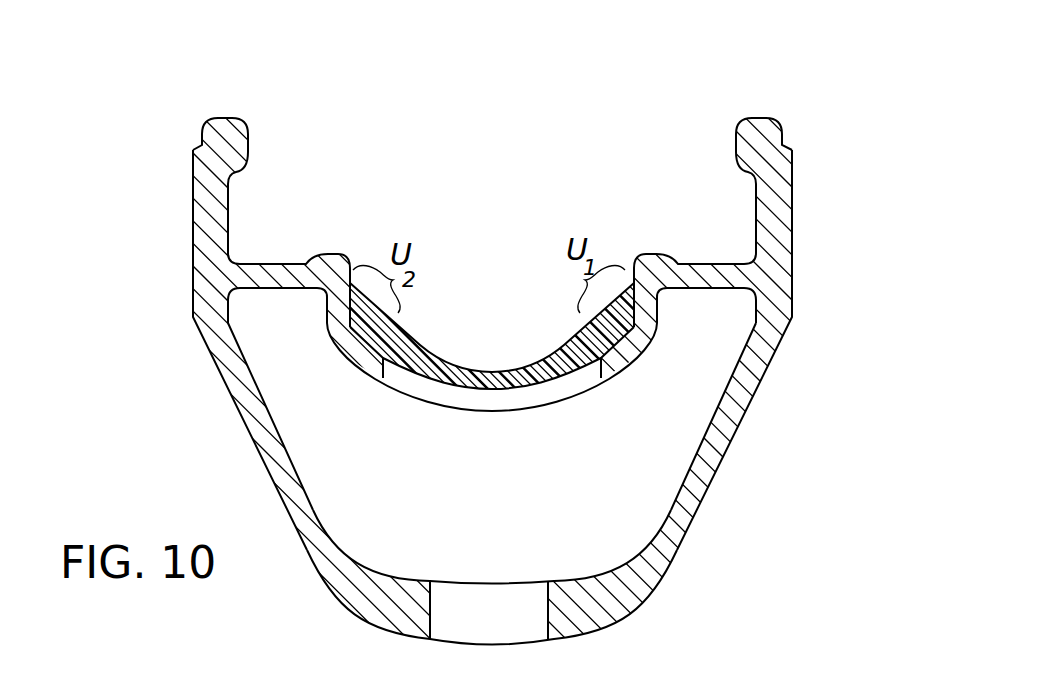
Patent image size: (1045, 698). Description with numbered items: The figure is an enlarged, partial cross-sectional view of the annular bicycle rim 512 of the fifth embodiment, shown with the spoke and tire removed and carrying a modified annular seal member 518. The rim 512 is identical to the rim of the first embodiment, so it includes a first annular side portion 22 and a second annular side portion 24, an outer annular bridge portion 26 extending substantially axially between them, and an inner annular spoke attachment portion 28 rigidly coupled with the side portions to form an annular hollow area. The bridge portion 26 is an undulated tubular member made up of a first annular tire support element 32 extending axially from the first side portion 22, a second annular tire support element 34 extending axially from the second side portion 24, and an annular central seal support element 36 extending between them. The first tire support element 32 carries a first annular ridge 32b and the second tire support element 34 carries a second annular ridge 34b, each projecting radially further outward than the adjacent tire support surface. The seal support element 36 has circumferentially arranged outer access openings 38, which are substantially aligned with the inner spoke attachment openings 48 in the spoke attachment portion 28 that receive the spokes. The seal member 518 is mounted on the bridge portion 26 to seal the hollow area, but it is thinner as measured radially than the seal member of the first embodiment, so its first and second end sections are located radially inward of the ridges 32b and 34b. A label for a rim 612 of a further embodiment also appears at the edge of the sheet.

The first annular side portion 22 is at (765, 118).
The second annular side portion 24 is at (231, 118).
The outer annular bridge portion 26 is at (641, 362).
The inner annular spoke attachment portion 28 is at (674, 563).
The first annular tire support element 32 is at (721, 282).
The first annular ridge 32b is at (664, 262).
The second annular tire support element 34 is at (289, 282).
The second annular ridge 34b is at (335, 262).
The annular central seal support element 36 is at (344, 352).
The outer access openings 38 is at (595, 357).
The inner spoke attachment openings 48 is at (547, 612).
The annular bicycle rim 512 is at (630, 166).
The annular seal member 518 is at (548, 316).
The bicycle rim 612 is at (687, 689).